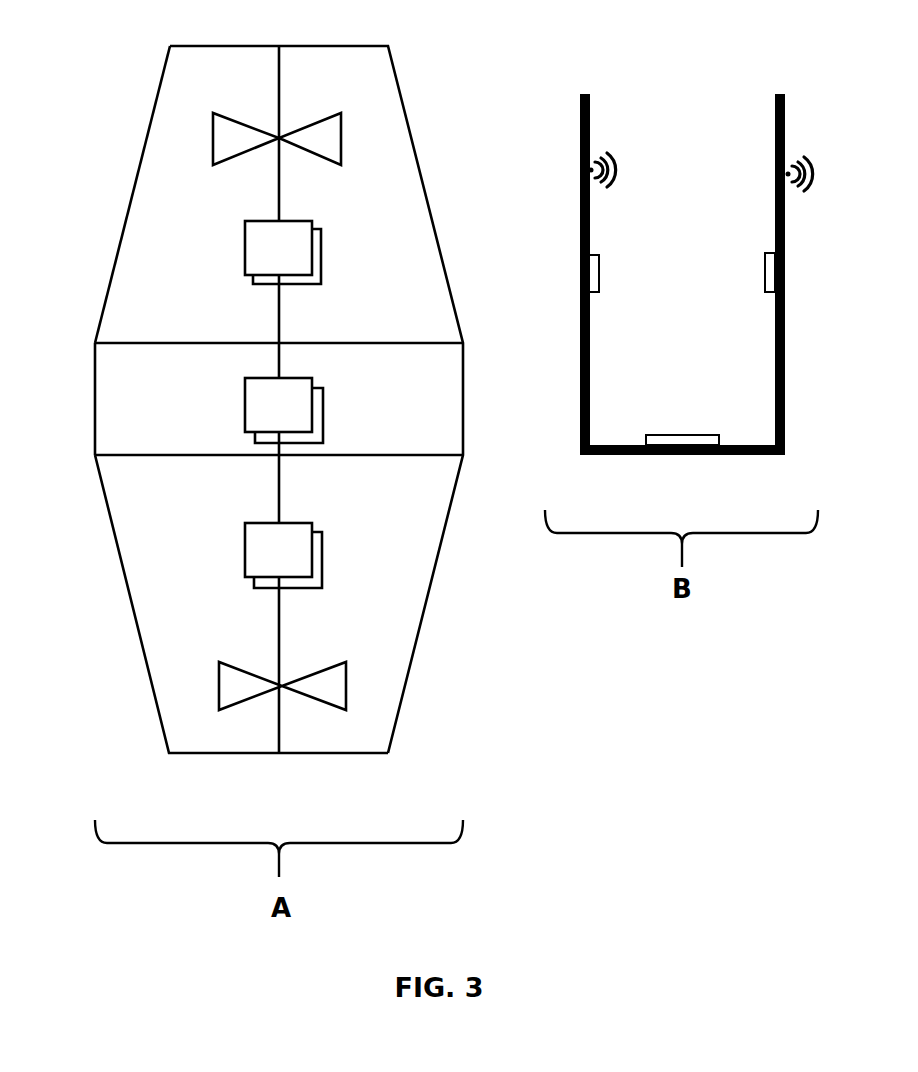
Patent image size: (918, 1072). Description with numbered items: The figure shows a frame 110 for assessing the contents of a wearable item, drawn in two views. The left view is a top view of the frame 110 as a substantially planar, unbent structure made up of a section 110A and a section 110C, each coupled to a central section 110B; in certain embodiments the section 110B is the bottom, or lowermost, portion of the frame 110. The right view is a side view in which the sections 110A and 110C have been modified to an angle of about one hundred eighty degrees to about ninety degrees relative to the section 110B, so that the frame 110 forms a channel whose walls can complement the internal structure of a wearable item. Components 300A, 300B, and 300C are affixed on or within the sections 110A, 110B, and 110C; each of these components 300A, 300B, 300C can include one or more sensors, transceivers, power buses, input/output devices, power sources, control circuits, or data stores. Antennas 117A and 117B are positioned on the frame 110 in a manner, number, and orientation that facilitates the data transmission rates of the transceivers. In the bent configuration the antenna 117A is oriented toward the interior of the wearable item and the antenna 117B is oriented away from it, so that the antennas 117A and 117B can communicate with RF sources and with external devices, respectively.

The frame 110 is at (770, 482).
The section 110A is at (143, 145).
The section 110B is at (95, 402).
The section 110C is at (247, 753).
The antenna 117A is at (318, 122).
The antenna 117B is at (218, 685).
The component 300A is at (240, 245).
The component 300B is at (243, 408).
The component 300C is at (243, 552).